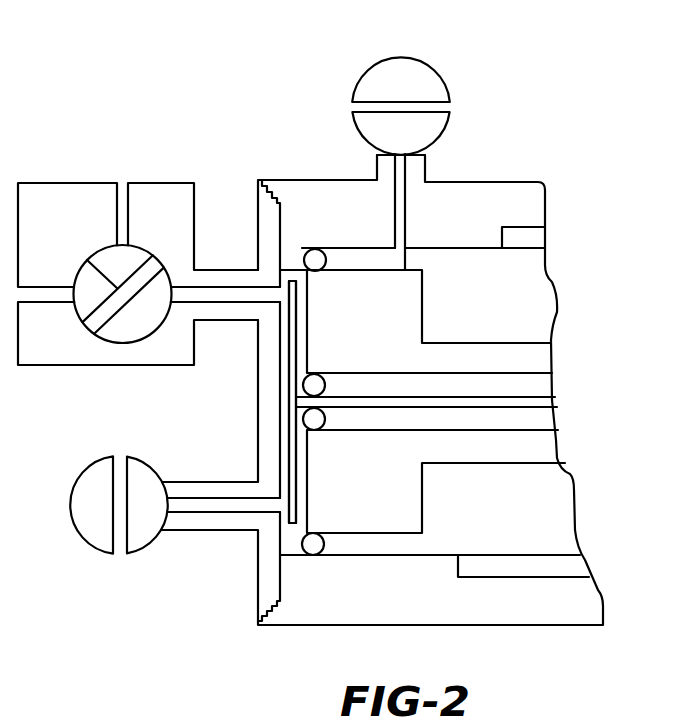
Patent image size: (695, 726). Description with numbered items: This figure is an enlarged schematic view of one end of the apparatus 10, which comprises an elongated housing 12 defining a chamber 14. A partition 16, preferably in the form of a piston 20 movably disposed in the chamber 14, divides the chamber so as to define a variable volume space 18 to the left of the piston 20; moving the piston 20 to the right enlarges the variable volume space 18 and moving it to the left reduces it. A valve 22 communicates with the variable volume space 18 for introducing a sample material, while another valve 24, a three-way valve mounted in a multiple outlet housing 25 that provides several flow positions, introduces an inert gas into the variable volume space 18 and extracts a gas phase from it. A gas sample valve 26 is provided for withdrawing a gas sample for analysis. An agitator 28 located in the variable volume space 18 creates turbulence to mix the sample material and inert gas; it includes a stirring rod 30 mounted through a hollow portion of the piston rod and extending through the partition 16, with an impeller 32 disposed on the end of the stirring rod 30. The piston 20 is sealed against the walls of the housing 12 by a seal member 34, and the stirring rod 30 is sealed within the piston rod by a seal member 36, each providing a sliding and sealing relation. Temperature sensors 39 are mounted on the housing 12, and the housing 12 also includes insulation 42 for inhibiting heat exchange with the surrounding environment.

The apparatus 10 is at (556, 166).
The elongated housing 12 is at (522, 210).
The chamber 14 is at (527, 300).
The partition 16 is at (410, 255).
The variable volume space 18 is at (303, 268).
The piston 20 is at (370, 497).
The valve 22 is at (96, 575).
The valve 24 is at (68, 165).
The multiple outlet housing 25 is at (152, 183).
The gas sample valve 26 is at (372, 64).
The agitator 28 is at (276, 437).
The stirring rod 30 is at (515, 401).
The impeller 32 is at (292, 343).
The seal member 34 is at (321, 266).
The seal member 36 is at (313, 419).
The temperature sensors 39 is at (528, 240).
The insulation 42 is at (560, 566).